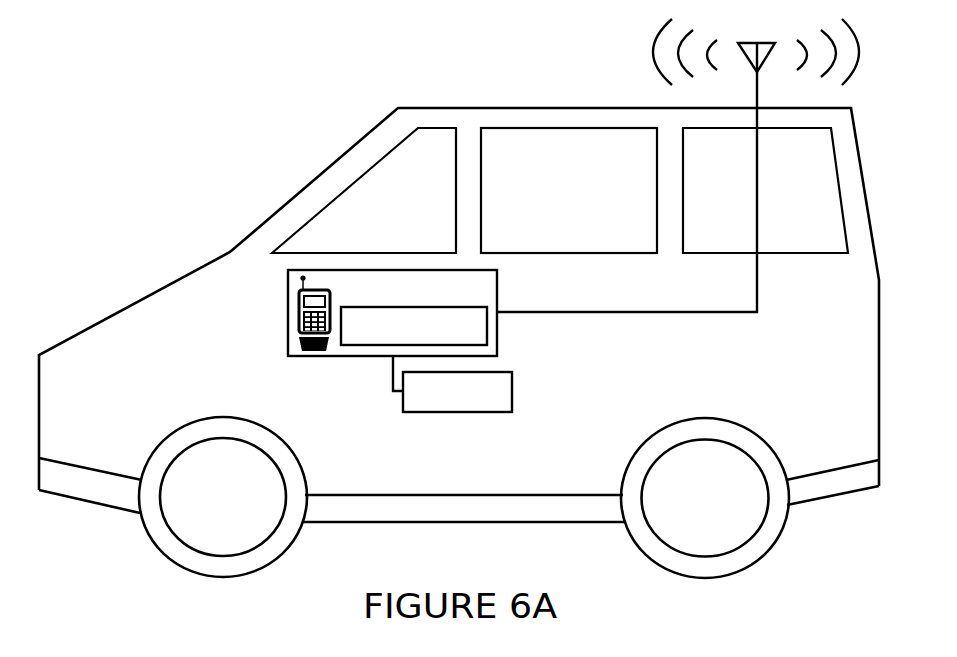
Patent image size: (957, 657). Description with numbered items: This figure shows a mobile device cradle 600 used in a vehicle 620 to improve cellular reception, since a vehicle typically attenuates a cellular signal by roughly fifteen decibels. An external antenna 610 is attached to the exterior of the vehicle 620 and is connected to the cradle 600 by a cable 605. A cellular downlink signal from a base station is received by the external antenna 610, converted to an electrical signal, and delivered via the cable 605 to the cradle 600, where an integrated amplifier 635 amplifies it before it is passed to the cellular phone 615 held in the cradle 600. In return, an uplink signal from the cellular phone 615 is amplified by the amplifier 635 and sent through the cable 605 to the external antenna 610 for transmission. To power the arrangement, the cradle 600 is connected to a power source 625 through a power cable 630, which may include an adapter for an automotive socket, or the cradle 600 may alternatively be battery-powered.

The mobile device cradle 600 is at (288, 338).
The cable 605 is at (758, 301).
The external antenna 610 is at (741, 38).
The cellular phone 615 is at (303, 278).
The vehicle 620 is at (152, 266).
The power source 625 is at (512, 392).
The power cable 630 is at (393, 391).
The integrated amplifier 635 is at (487, 342).